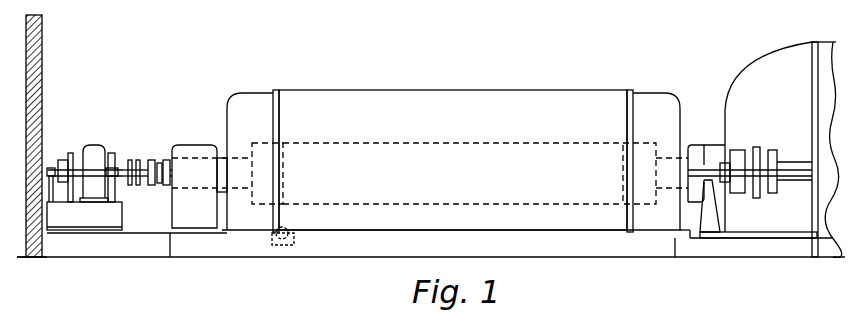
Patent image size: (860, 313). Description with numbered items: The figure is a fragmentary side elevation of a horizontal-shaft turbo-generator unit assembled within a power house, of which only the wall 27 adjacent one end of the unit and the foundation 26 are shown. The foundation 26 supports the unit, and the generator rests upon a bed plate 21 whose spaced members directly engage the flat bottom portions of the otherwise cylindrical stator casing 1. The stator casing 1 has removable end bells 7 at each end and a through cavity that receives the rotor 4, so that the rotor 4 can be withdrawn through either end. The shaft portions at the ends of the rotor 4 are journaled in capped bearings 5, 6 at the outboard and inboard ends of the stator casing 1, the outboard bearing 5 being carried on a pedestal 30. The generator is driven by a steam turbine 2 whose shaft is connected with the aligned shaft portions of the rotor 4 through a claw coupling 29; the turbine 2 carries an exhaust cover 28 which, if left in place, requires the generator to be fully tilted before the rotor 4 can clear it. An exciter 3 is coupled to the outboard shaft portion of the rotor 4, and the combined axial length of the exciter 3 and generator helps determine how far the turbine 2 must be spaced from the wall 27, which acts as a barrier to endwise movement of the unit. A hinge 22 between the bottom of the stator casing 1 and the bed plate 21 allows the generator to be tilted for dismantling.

The stator casing 1 is at (447, 92).
The steam turbine 2 is at (827, 45).
The exciter 3 is at (97, 152).
The rotor 4 is at (375, 143).
The capped bearing 5 is at (199, 145).
The capped bearing 6 is at (702, 145).
The end bells 7 is at (250, 93).
The bed plate 21 is at (135, 248).
The hinge 22 is at (290, 230).
The foundation 26 is at (20, 257).
The wall 27 is at (38, 94).
The exhaust cover 28 is at (752, 68).
The claw coupling 29 is at (762, 147).
The pedestal 30 is at (176, 207).